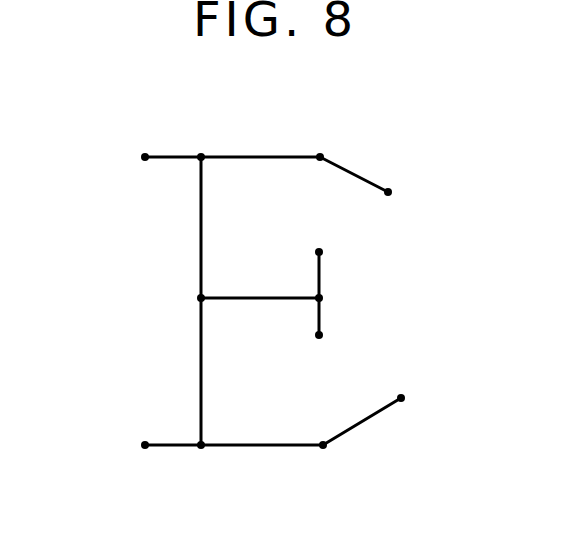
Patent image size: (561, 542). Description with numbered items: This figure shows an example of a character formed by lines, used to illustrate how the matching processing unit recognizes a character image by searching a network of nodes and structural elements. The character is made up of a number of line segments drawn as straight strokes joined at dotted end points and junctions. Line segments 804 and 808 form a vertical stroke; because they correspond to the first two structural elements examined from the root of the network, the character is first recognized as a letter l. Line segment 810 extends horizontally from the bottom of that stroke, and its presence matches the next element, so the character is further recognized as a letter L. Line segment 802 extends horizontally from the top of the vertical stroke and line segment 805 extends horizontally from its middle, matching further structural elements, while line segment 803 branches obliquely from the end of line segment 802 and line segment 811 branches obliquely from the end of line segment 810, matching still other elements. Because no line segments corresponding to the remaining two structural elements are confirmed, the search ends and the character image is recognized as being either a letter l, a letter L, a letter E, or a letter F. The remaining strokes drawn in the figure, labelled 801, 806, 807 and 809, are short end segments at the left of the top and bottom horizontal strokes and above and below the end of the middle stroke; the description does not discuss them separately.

The input terminal 801 is at (171, 142).
The line segment 802 is at (260, 142).
The line segment 803 is at (356, 166).
The line segment 804 is at (176, 227).
The line segment 805 is at (260, 286).
The upper middle stub 806 is at (344, 273).
The lower middle stub 807 is at (344, 318).
The line segment 808 is at (176, 371).
The lower input terminal 809 is at (172, 462).
The line segment 810 is at (262, 432).
The line segment 811 is at (364, 427).